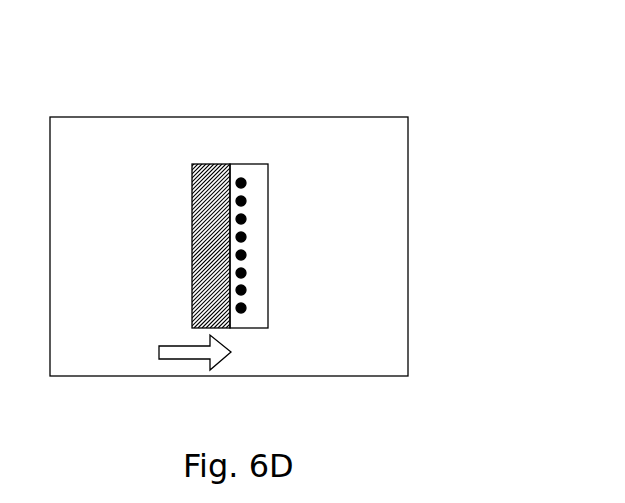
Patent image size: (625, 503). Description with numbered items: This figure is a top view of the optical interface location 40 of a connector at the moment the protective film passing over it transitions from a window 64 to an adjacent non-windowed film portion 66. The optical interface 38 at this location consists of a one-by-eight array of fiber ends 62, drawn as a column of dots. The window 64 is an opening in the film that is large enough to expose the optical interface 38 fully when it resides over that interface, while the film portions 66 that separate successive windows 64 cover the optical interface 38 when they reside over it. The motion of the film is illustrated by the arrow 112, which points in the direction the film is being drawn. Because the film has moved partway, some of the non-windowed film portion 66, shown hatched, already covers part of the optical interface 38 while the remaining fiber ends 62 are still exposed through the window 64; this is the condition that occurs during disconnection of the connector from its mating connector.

The optical interface 38 is at (283, 306).
The optical interface location 40 is at (254, 150).
The fiber ends 62 is at (247, 272).
The window 64 is at (263, 199).
The film portion 66 is at (208, 172).
The arrow 112 is at (177, 358).